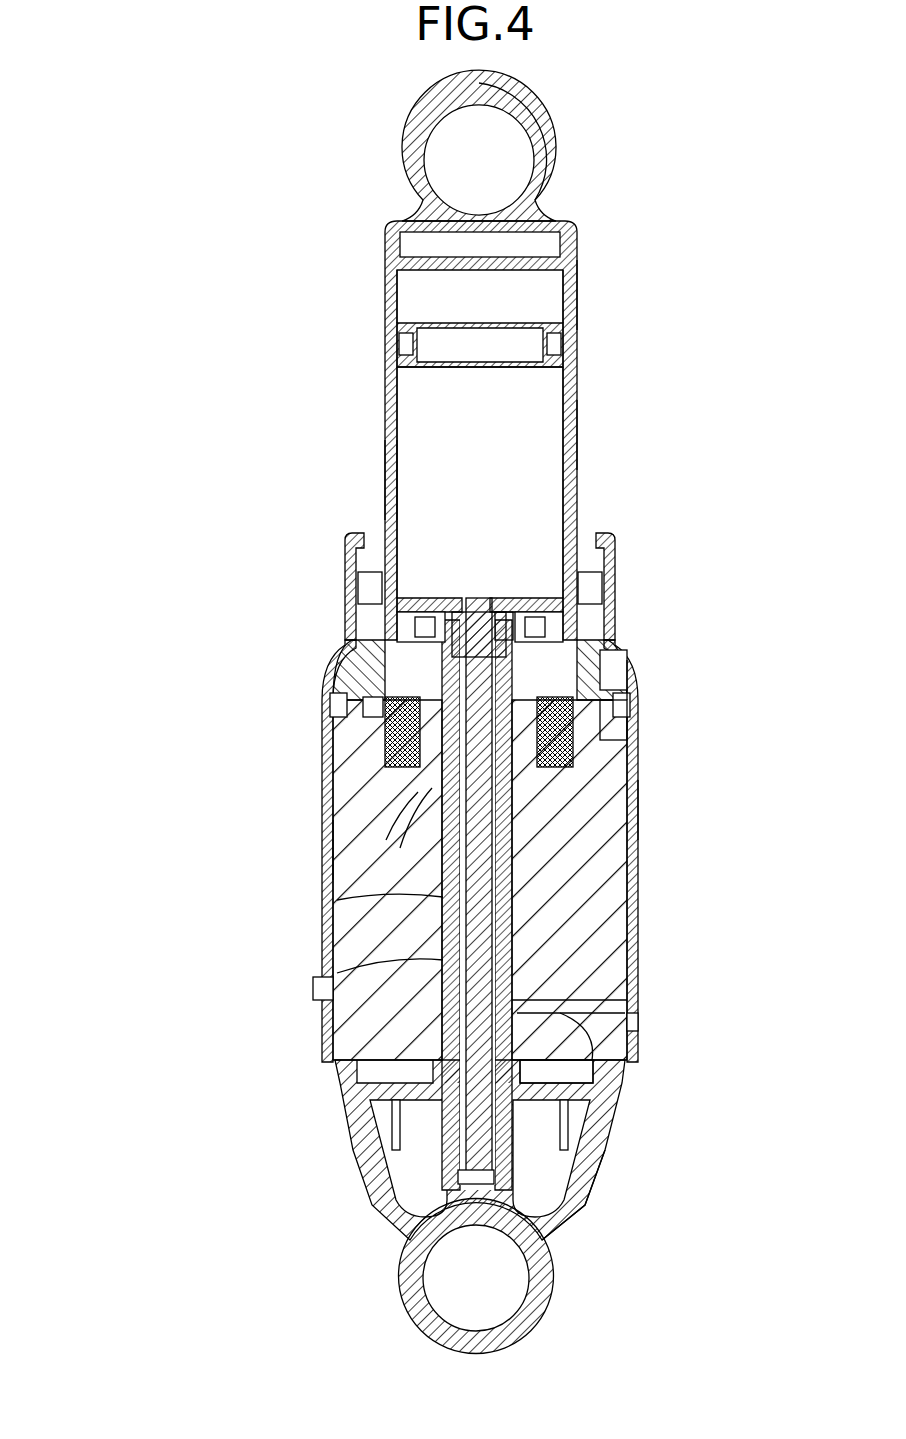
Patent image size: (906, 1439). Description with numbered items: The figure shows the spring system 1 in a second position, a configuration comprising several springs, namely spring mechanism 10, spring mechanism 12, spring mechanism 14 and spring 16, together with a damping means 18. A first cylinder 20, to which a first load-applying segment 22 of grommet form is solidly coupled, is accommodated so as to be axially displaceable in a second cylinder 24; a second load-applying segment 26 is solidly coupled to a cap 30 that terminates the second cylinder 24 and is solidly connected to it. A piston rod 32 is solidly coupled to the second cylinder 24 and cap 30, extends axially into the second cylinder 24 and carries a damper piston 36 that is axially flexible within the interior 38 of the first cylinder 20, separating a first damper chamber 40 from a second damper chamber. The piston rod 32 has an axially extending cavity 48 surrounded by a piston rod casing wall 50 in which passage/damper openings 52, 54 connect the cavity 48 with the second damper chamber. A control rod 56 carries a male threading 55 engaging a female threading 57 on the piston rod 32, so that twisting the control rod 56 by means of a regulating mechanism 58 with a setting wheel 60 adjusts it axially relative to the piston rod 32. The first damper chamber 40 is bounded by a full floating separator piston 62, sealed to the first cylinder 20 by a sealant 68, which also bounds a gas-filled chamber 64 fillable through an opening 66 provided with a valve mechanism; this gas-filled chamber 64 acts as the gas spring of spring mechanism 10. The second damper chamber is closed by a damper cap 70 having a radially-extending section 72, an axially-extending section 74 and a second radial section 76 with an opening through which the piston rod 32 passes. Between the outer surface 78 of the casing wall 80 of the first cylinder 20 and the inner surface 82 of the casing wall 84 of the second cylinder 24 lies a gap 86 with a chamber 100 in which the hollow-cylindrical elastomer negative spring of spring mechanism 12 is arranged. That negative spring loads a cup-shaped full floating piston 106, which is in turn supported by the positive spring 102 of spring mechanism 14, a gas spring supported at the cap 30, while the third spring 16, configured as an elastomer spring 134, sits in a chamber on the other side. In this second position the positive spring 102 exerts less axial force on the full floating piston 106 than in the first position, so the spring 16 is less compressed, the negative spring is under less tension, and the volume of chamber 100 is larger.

The spring system 1 is at (626, 101).
The spring mechanism 10 is at (601, 292).
The spring mechanism 12 is at (651, 646).
The spring mechanism 14 is at (676, 811).
The spring 16 is at (570, 812).
The damping means 18 is at (601, 436).
The first cylinder 20 is at (577, 380).
The first load-applying segment 22 is at (530, 108).
The second cylinder 24 is at (640, 877).
The second load-applying segment 26 is at (548, 1308).
The cap 30 is at (337, 1095).
The piston rod 32 is at (320, 1000).
The damper piston 36 is at (615, 562).
The interior 38 is at (385, 452).
The first damper chamber 40 is at (540, 496).
The cavity 48 is at (592, 1082).
The piston rod casing wall 50 is at (325, 920).
The passage/damper opening 52 is at (600, 725).
The passage/damper opening 54 is at (325, 810).
The male threading 55 is at (470, 640).
The control rod 56 is at (453, 1150).
The female threading 57 is at (512, 640).
The regulating mechanism 58 is at (587, 1143).
The setting wheel 60 is at (592, 1182).
The full floating separator piston 62 is at (440, 370).
The gas-filled chamber 64 is at (385, 306).
The opening 66 is at (572, 232).
The sealant 68 is at (562, 344).
The damper cap 70 is at (325, 852).
The radially-extending section 72 is at (620, 638).
The axially-extending section 74 is at (633, 670).
The second radial section 76 is at (410, 828).
The outer surface 78 is at (383, 500).
The casing wall 80 is at (383, 480).
The inner surface 82 is at (325, 765).
The casing wall 84 is at (335, 630).
The gap 86 is at (348, 600).
The chamber 100 is at (635, 628).
The positive spring 102 is at (638, 1020).
The full floating piston 106 is at (327, 712).
The elastomer spring 134 is at (330, 730).